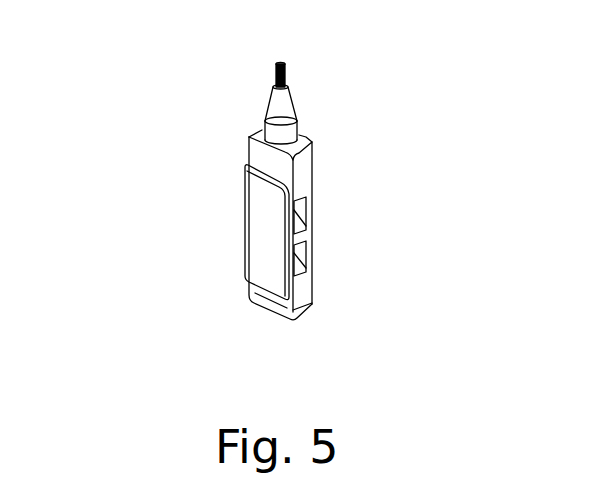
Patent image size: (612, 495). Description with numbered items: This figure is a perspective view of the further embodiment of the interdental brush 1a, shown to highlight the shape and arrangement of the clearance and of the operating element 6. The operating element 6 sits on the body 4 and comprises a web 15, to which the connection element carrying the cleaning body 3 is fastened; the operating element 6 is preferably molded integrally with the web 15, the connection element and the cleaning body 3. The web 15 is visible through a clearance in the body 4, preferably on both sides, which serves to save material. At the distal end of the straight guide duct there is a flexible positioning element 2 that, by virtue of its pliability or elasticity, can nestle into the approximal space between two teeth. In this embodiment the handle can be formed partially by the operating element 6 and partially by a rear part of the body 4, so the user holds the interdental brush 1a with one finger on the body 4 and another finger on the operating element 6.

The interdental brush 1a is at (75, 52).
The positioning element 2 is at (283, 103).
The cleaning body 3 is at (287, 73).
The body 4 is at (180, 60).
The operating element 6 is at (263, 205).
The web 15 is at (307, 240).